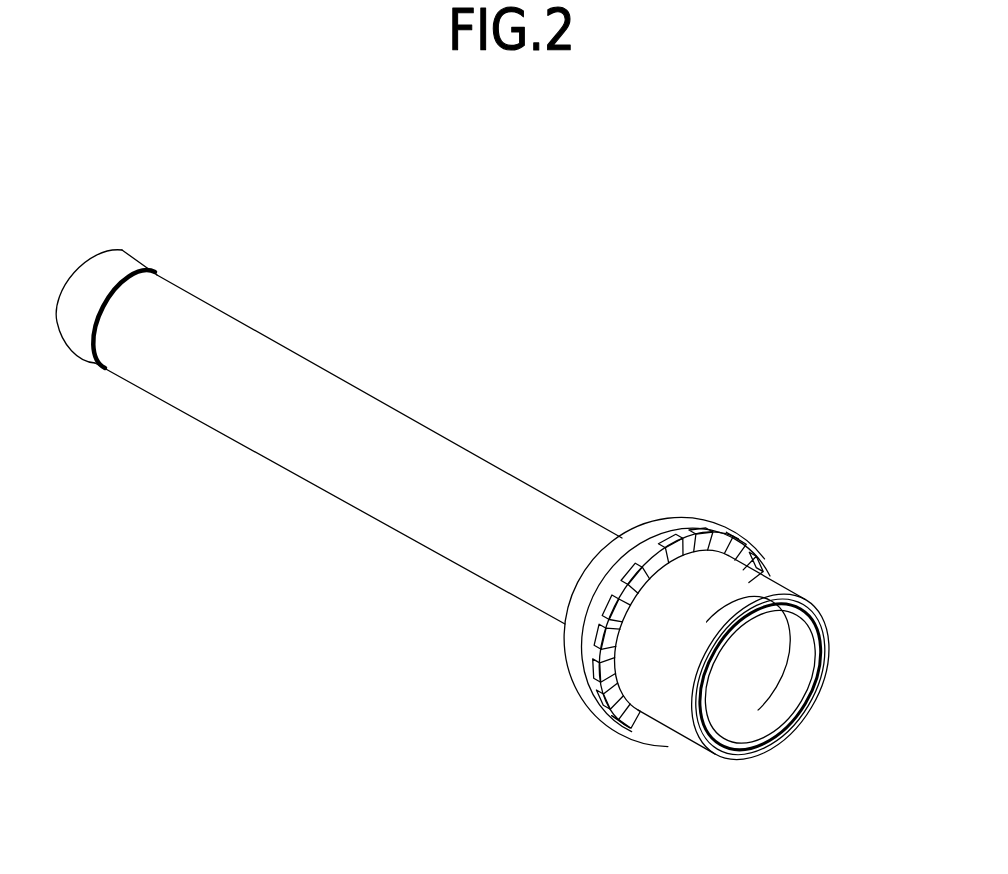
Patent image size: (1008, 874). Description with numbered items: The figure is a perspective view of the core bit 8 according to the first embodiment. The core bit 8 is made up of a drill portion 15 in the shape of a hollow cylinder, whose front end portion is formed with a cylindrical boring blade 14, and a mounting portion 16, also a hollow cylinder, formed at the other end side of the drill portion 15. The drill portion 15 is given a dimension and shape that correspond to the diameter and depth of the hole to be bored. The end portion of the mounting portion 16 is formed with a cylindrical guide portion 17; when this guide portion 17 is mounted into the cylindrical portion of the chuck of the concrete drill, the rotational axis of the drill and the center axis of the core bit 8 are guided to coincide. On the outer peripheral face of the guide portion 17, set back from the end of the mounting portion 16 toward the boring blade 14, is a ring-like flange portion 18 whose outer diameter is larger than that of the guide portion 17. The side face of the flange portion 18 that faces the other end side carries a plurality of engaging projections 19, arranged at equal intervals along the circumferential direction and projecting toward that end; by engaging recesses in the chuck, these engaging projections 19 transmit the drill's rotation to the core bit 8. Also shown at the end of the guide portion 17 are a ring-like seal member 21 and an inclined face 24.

The core bit 8 is at (534, 336).
The boring blade 14 is at (122, 250).
The drill portion 15 is at (250, 455).
The mounting portion 16 is at (574, 762).
The guide portion 17 is at (787, 588).
The flange portion 18 is at (570, 660).
The engaging projection 19 is at (627, 593).
The ring-like seal member 21 is at (753, 758).
The inclined face 24 is at (802, 717).